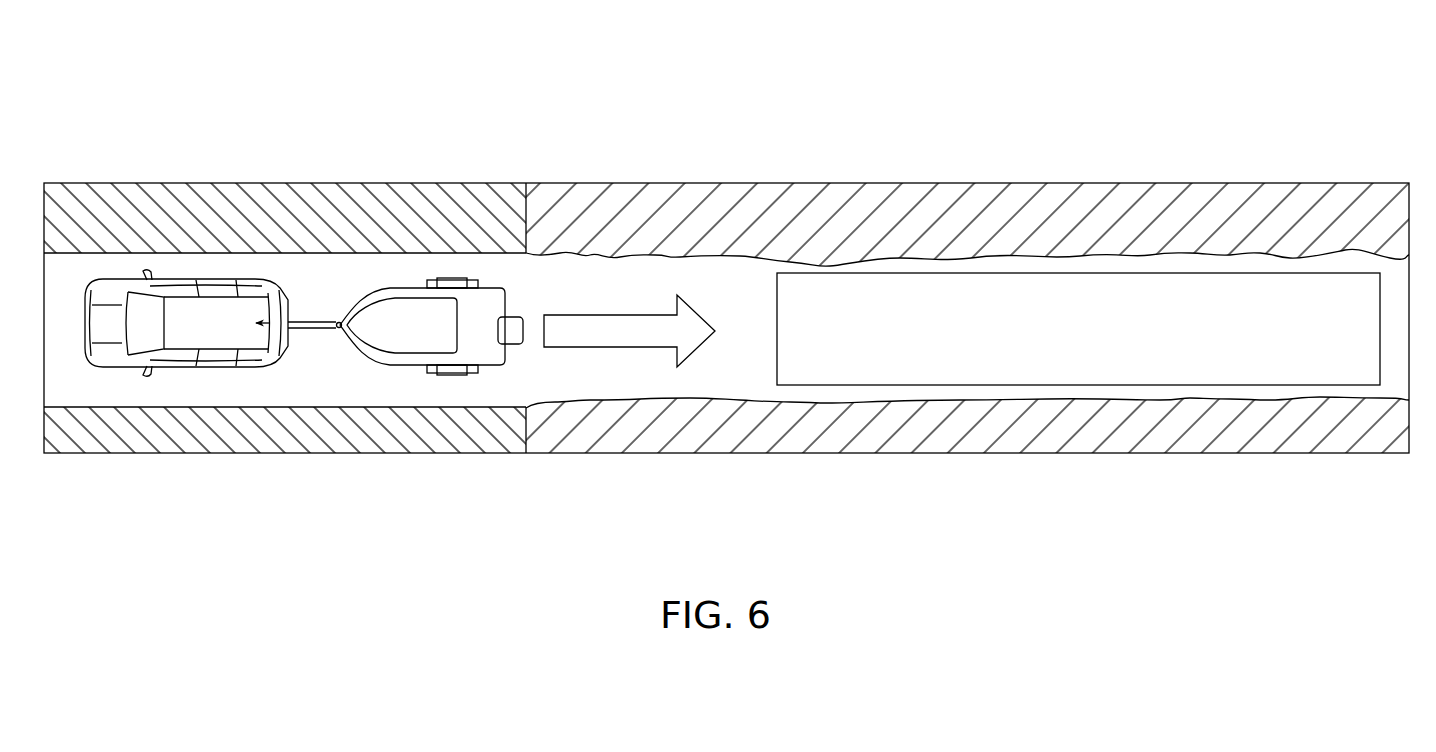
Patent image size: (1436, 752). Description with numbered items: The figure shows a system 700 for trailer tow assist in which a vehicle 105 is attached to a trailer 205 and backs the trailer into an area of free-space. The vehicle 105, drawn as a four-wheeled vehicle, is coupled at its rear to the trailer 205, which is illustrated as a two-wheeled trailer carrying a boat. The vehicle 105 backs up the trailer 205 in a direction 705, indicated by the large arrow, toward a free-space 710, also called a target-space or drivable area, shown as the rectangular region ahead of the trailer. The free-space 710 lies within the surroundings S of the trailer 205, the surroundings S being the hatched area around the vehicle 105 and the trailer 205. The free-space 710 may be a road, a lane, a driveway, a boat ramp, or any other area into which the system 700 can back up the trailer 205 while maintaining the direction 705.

The system 700 is at (450, 73).
The vehicle 105 is at (203, 283).
The trailer 205 is at (422, 285).
The direction 705 is at (600, 313).
The free-space 710 is at (963, 272).
The surroundings S is at (720, 218).